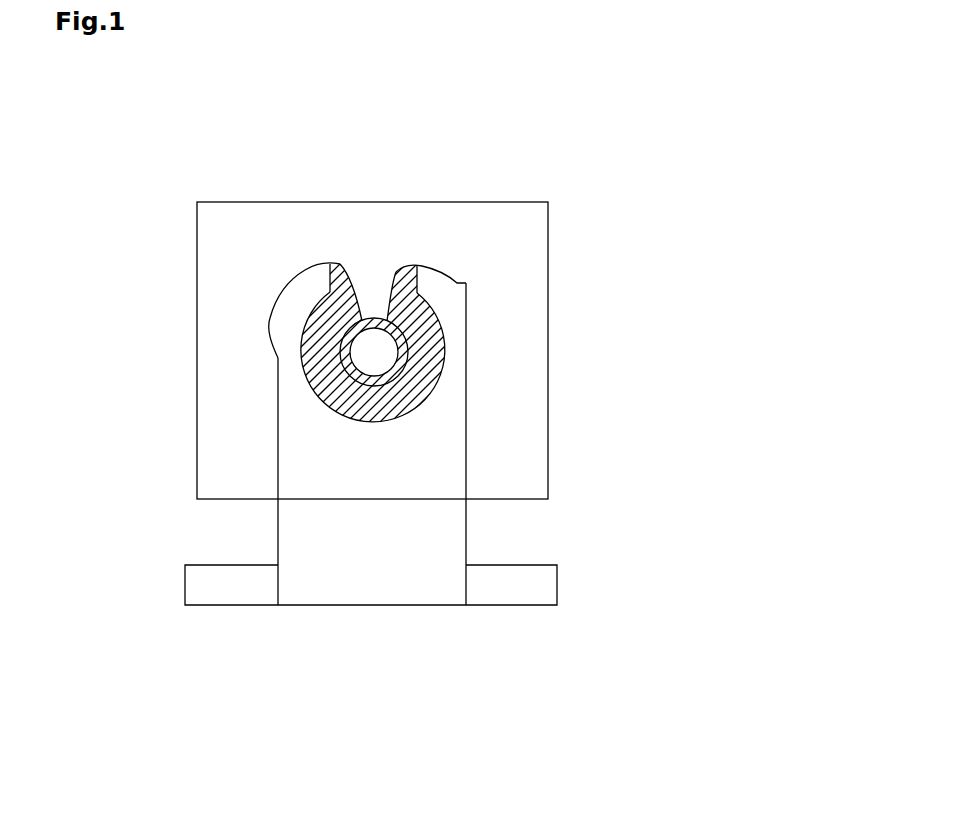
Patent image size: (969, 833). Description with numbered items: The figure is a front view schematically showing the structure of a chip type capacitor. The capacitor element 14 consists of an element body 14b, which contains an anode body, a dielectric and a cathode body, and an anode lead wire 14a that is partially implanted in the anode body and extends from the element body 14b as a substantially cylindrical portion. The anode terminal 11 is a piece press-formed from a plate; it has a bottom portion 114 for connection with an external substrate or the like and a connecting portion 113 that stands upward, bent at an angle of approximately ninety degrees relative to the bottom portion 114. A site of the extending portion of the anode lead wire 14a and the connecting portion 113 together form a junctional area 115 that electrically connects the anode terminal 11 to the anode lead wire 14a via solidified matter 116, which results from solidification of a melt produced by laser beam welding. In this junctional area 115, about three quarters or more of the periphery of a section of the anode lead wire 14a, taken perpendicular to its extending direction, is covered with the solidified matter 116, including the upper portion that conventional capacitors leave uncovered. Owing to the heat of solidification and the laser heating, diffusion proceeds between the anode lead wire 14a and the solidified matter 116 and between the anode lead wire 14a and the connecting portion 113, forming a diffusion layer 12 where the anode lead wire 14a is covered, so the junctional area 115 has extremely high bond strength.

The anode terminal 11 is at (484, 540).
The diffusion layer 12 is at (316, 358).
The capacitor element 14 is at (560, 240).
The anode lead wire 14a is at (373, 352).
The element body 14b is at (548, 310).
The connecting portion 113 is at (466, 533).
The bottom portion 114 is at (522, 593).
The junctional area 115 is at (376, 245).
The solidified matter 116 is at (400, 268).